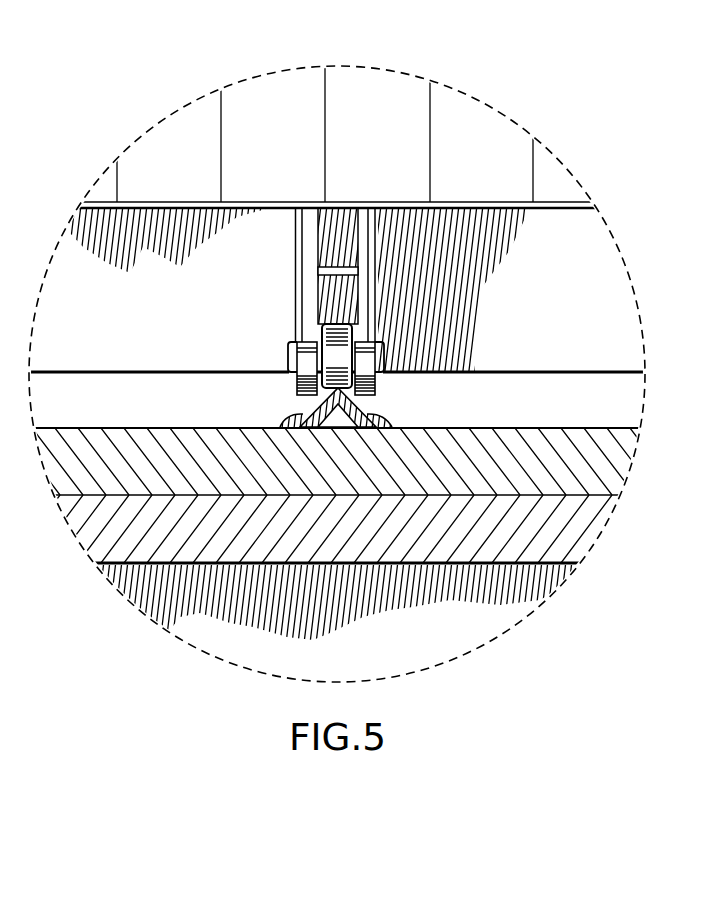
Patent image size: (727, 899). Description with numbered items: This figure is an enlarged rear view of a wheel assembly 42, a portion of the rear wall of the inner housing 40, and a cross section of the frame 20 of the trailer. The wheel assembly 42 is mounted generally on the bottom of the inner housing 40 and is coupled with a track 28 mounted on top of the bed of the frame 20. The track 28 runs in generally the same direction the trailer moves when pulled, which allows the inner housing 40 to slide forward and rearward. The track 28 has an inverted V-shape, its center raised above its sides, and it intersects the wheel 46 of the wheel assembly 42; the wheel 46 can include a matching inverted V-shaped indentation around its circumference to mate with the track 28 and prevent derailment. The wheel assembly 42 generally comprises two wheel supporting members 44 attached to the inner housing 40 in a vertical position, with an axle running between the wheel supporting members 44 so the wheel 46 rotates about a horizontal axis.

The inner housing 40 is at (378, 128).
The wheel assembly 42 is at (269, 281).
The wheel supporting members 44 is at (308, 313).
The wheel 46 is at (337, 343).
The track 28 is at (318, 418).
The frame 20 is at (478, 450).